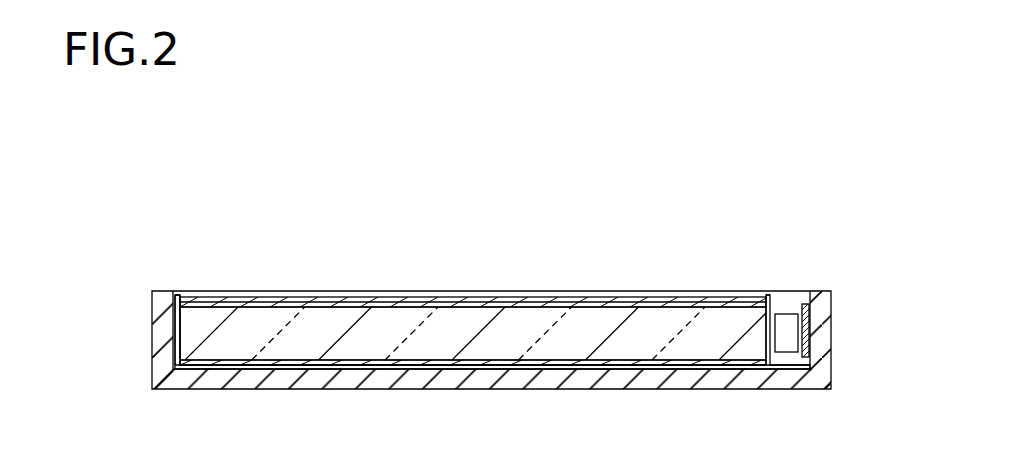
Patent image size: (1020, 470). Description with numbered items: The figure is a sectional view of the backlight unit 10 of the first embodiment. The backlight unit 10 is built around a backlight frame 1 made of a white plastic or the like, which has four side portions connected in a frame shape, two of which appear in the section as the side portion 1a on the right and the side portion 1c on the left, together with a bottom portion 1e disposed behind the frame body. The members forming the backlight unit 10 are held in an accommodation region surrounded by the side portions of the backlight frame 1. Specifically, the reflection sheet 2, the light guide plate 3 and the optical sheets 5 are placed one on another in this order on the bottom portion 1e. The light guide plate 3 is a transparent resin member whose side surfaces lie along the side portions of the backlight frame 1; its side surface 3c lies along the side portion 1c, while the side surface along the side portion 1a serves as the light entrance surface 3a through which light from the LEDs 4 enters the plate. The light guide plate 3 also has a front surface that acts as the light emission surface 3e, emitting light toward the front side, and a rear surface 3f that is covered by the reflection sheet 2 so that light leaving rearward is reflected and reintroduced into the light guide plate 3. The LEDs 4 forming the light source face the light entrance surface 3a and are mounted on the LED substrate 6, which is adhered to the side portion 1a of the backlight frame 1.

The backlight unit 10 is at (193, 257).
The backlight frame 1 is at (822, 290).
The side portion 1a is at (825, 357).
The side portion 1c is at (157, 340).
The bottom portion 1e is at (472, 382).
The reflection sheet 2 is at (668, 366).
The light guide plate 3 is at (703, 338).
The light entrance surface 3a is at (775, 345).
The side surface 3c is at (174, 355).
The light emission surface 3e is at (572, 300).
The rear surface 3f is at (572, 367).
The LED 4 is at (785, 325).
The optical sheet 5 is at (670, 300).
The LED substrate 6 is at (807, 307).